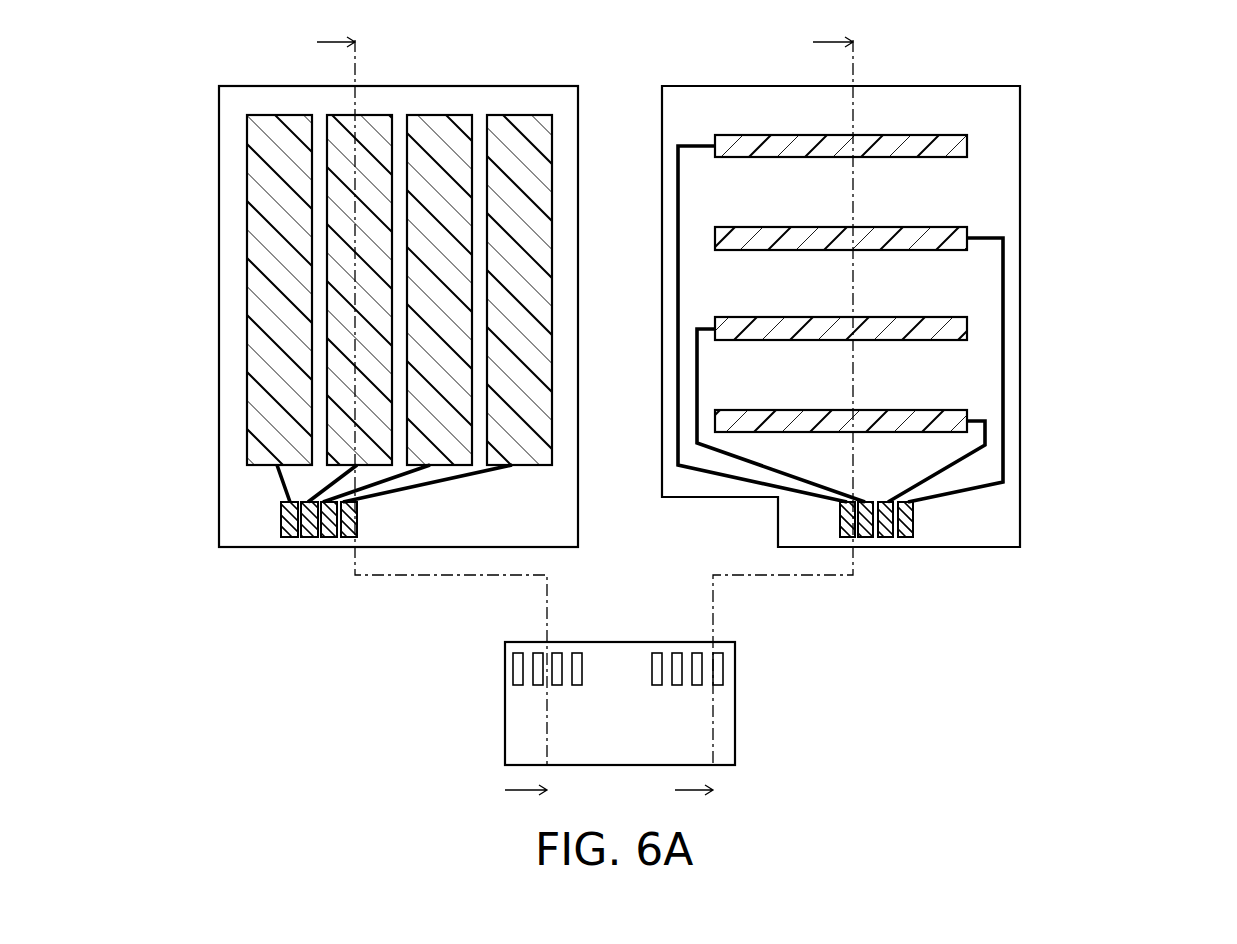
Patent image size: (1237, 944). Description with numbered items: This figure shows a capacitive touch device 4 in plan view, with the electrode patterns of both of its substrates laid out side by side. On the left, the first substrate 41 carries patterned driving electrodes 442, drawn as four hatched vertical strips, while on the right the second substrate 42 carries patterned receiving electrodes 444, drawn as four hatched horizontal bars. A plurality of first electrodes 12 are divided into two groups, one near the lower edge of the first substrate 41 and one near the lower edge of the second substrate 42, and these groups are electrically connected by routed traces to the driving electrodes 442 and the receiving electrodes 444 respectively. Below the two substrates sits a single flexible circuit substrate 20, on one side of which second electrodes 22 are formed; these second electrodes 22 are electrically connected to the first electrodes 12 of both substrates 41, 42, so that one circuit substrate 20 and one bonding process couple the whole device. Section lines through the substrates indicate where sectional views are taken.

The capacitive touch device 4 is at (1206, 82).
The first substrate 41 is at (233, 532).
The second substrate 42 is at (1005, 530).
The patterned driving electrodes 442 is at (258, 272).
The patterned receiving electrodes 444 is at (963, 143).
The first electrodes 12 is at (290, 537).
The circuit substrate 20 is at (725, 748).
The second electrodes 22 is at (517, 653).